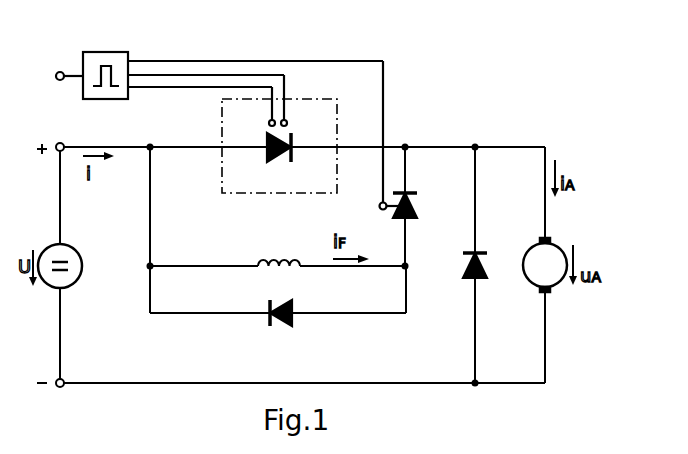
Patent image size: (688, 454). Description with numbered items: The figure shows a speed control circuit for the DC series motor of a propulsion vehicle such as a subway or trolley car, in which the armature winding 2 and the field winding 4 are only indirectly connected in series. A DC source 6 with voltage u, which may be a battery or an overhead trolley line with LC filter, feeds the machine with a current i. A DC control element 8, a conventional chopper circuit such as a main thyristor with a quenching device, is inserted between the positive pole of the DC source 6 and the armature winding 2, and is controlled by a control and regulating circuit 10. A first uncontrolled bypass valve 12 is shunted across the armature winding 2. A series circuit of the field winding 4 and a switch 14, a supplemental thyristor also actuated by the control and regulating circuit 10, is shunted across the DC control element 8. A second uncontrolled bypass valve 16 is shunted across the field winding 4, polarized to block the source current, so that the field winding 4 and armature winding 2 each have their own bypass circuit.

The armature winding 2 is at (524, 252).
The field winding 4 is at (285, 257).
The DC source 6 is at (77, 282).
The DC control element 8 is at (337, 108).
The control and regulating circuit 10 is at (105, 52).
The first uncontrolled bypass valve 12 is at (469, 280).
The switch 14 is at (419, 209).
The second uncontrolled bypass valve 16 is at (292, 308).